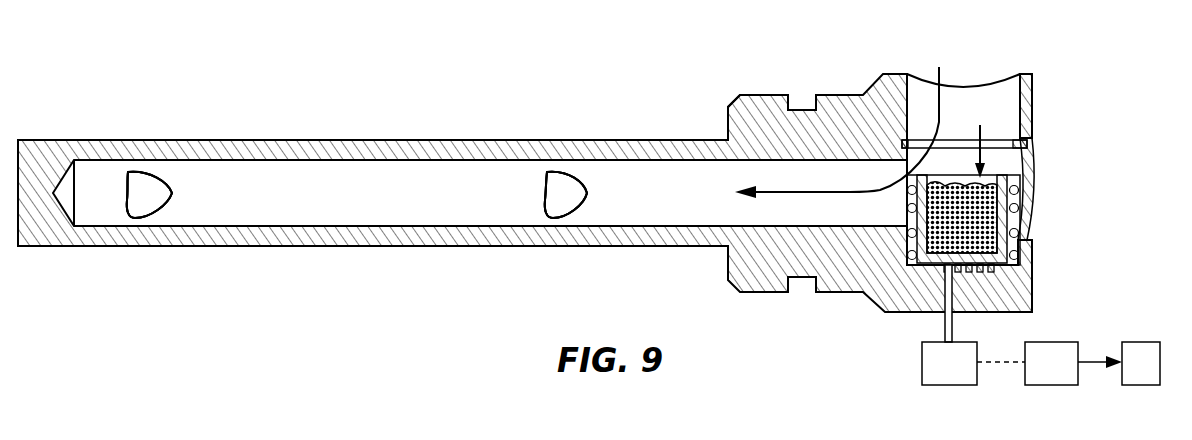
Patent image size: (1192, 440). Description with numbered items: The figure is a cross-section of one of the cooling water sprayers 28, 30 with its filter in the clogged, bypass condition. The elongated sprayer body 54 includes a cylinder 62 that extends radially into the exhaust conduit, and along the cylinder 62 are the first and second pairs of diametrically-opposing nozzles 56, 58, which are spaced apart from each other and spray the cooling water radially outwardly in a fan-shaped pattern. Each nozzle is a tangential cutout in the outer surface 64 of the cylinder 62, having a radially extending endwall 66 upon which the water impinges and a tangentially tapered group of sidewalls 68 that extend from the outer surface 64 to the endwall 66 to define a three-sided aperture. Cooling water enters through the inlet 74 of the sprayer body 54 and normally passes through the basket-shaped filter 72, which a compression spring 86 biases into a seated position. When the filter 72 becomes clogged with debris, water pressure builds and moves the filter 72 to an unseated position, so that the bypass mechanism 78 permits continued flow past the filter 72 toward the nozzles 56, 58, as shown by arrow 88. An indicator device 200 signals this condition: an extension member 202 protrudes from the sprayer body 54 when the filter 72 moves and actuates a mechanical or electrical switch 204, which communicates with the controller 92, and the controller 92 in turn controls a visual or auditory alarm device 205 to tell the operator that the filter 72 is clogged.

The cooling water sprayer 28 is at (732, 78).
The cooling water sprayer 30 is at (698, 89).
The sprayer body 54 is at (397, 148).
The first pair of nozzles 56 is at (163, 173).
The second pair of nozzles 58 is at (581, 175).
The cylinder 62 is at (358, 240).
The outer surface of the cylinder 64 is at (288, 140).
The endwall 66 is at (128, 193).
The tangentially tapered group of sidewalls 68 is at (160, 205).
The filter 72 is at (1040, 185).
The inlet 74 is at (1000, 103).
The bypass mechanism 78 is at (1012, 214).
The compression spring 86 is at (1016, 256).
The arrow 88 is at (805, 193).
The controller 92 is at (1057, 342).
The indicator device 200 is at (1070, 84).
The extension member 202 is at (940, 292).
The switch 204 is at (922, 365).
The alarm device 205 is at (1138, 342).